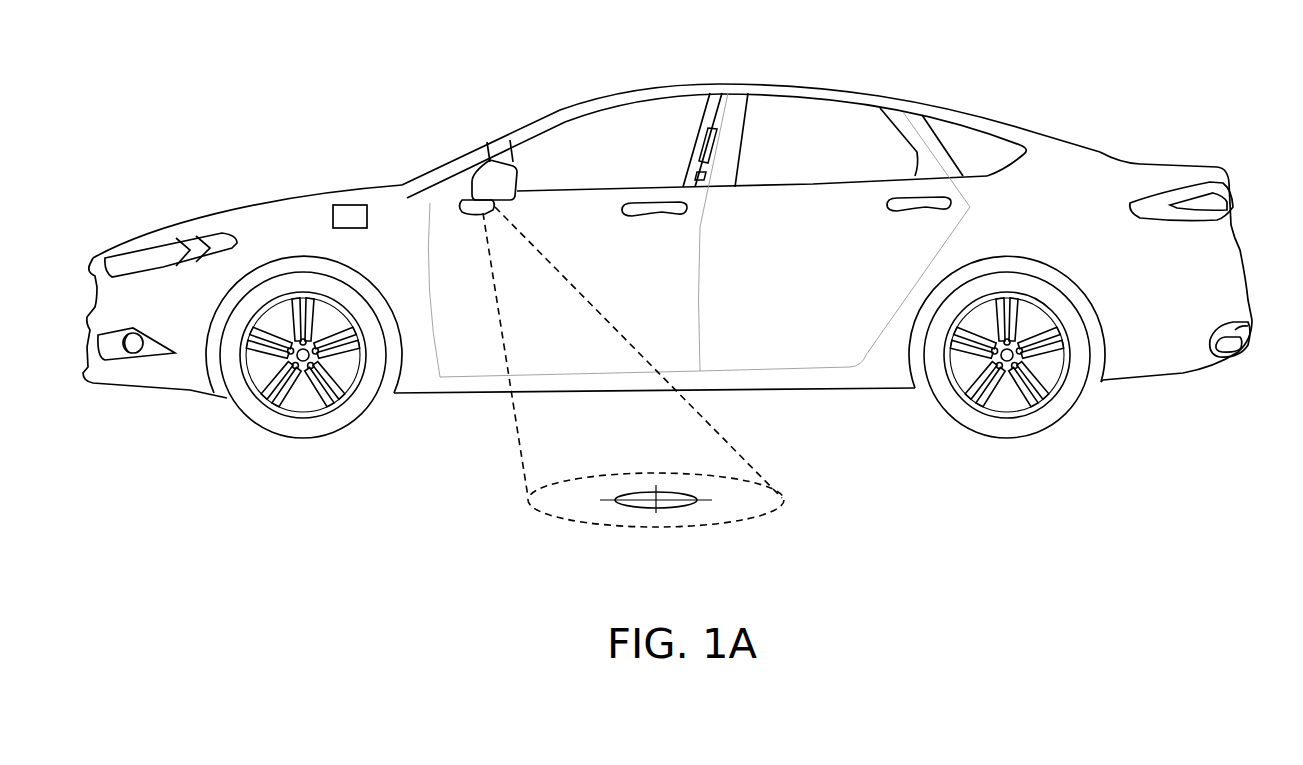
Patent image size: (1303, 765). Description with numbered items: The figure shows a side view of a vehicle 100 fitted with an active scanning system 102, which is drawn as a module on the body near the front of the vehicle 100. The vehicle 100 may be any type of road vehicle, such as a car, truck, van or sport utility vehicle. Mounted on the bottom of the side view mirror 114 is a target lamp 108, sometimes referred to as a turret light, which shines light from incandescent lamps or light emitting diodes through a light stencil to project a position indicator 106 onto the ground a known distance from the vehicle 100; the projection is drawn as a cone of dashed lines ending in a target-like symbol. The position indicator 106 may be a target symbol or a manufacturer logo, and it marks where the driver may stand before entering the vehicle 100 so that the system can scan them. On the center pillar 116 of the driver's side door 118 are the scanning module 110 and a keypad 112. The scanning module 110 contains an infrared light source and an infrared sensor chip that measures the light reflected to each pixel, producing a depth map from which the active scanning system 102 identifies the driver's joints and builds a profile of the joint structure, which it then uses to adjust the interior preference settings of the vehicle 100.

The vehicle 100 is at (1170, 165).
The active scanning system 102 is at (350, 205).
The position indicator 106 is at (783, 507).
The target lamp 108 is at (472, 200).
The scanning module 110 is at (708, 175).
The keypad 112 is at (700, 148).
The side view mirror 114 is at (483, 142).
The center pillar 116 is at (717, 107).
The driver's side door 118 is at (467, 355).